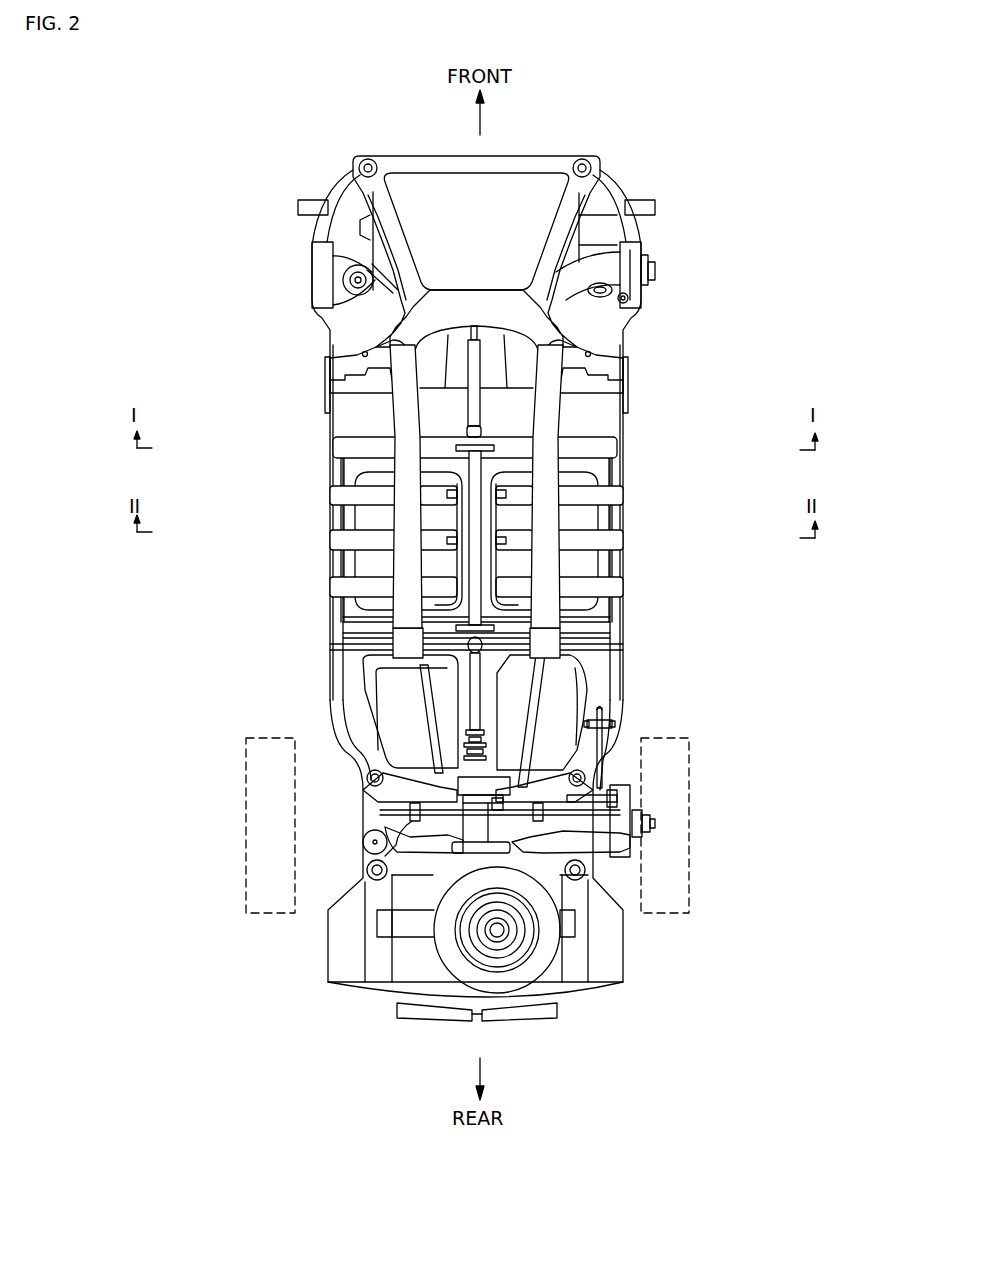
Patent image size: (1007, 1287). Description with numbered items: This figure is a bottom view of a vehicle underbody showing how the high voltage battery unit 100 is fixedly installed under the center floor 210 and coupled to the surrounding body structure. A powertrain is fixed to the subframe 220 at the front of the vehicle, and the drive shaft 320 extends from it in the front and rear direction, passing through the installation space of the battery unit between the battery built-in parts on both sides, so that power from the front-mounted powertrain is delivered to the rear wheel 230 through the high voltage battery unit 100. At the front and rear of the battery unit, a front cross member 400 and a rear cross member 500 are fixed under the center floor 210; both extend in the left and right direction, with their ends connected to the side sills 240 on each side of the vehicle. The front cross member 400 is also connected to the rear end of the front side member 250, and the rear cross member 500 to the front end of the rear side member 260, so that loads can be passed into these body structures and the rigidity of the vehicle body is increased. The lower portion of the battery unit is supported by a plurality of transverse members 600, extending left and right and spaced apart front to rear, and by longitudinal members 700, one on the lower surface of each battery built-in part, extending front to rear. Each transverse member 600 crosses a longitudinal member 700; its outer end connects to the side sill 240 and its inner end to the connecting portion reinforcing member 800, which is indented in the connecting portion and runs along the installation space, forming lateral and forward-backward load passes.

The high voltage battery unit 100 is at (618, 474).
The center floor 210 is at (612, 606).
The subframe 220 is at (522, 156).
The rear wheel 230 is at (247, 843).
The side sill 240 is at (350, 512).
The front side member 250 is at (400, 408).
The rear side member 260 is at (350, 652).
The drive shaft 320 is at (480, 360).
The front cross member 400 is at (365, 437).
The rear cross member 500 is at (353, 622).
The transverse member 600 is at (343, 487).
The longitudinal member 700 is at (410, 518).
The connecting portion reinforcing member 800 is at (430, 470).